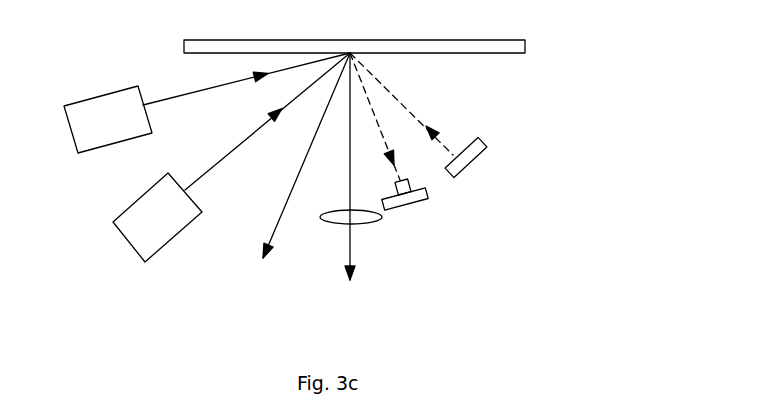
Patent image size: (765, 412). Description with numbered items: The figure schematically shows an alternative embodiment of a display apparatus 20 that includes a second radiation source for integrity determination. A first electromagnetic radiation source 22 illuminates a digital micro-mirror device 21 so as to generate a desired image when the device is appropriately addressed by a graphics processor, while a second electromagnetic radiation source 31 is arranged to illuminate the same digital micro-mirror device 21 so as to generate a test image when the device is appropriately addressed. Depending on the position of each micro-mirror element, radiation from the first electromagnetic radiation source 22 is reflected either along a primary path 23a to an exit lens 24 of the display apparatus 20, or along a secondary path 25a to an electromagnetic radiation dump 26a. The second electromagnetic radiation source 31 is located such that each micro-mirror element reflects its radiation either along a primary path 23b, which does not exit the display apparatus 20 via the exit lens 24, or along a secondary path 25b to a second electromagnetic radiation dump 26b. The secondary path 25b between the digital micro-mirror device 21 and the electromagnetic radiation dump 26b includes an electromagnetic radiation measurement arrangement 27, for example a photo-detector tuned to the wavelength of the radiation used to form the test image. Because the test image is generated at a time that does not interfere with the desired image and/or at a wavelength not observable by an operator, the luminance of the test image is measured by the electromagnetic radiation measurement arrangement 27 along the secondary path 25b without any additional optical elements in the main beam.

The display apparatus 20 is at (634, 88).
The digital micro-mirror device 21 is at (525, 53).
The first electromagnetic radiation source 22 is at (172, 222).
The primary path 23a is at (348, 273).
The primary path 23b is at (260, 247).
The exit lens 24 is at (373, 220).
The secondary path 25a is at (436, 126).
The secondary path 25b is at (393, 158).
The electromagnetic radiation dump 26a is at (487, 142).
The electromagnetic radiation dump 26b is at (410, 203).
The electromagnetic radiation measurement arrangement 27 is at (410, 183).
The second electromagnetic radiation source 31 is at (107, 130).